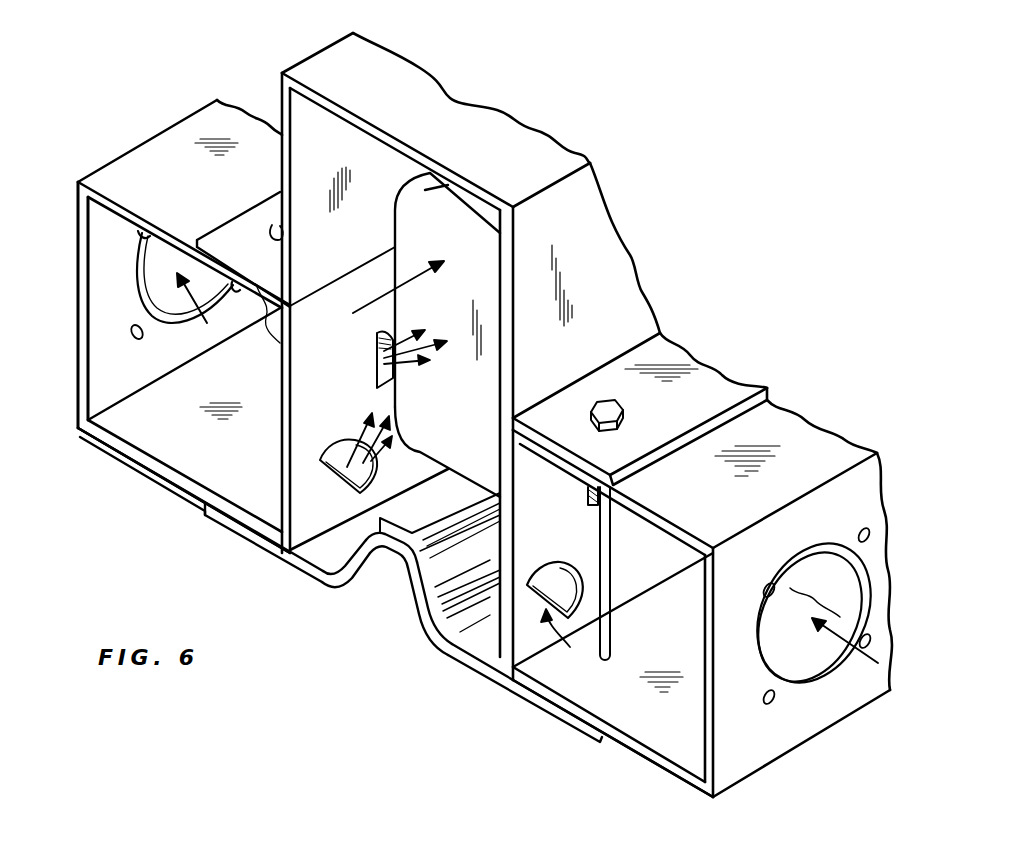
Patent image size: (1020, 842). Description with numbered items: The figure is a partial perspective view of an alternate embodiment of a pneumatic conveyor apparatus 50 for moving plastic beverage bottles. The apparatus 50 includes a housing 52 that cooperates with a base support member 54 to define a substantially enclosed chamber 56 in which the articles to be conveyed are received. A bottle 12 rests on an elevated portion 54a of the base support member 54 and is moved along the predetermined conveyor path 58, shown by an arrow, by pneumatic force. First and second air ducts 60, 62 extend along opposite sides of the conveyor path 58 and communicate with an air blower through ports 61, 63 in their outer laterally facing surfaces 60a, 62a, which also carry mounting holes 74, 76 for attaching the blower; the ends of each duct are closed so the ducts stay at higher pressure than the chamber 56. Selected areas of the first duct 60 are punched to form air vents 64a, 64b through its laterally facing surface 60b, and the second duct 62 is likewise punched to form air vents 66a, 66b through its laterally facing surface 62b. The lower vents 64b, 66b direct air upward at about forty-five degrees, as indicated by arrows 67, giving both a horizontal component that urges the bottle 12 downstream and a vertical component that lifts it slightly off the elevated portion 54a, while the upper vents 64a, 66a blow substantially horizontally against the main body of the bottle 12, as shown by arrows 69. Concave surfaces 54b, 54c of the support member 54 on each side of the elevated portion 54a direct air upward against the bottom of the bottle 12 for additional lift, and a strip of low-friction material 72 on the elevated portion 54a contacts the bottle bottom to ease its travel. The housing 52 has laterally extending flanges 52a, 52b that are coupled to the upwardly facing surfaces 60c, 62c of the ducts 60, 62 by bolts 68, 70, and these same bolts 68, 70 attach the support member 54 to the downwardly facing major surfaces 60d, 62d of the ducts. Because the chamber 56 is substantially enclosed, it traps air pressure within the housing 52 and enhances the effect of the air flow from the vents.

The bottle 12 is at (407, 213).
The pneumatic conveyor apparatus 50 is at (525, 74).
The housing 52 is at (595, 237).
The laterally extending flange 52a is at (178, 190).
The laterally extending flange 52b is at (710, 371).
The base support member 54 is at (242, 533).
The elevated portion 54a is at (391, 560).
The concave surface 54b is at (327, 578).
The concave surface 54c is at (419, 612).
The chamber 56 is at (282, 117).
The conveyor path 58 is at (382, 300).
The first air duct 60 is at (131, 150).
The laterally facing surface 60a is at (103, 297).
The laterally facing surface 60b is at (305, 434).
The upwardly facing surface 60c is at (197, 127).
The downwardly facing major surface 60d is at (150, 489).
The port 61 is at (206, 322).
The second air duct 62 is at (827, 427).
The laterally facing surface 62a is at (795, 733).
The laterally facing surface 62b is at (633, 570).
The upwardly facing surface 62c is at (787, 420).
The downwardly facing major surface 62d is at (630, 752).
The port 63 is at (857, 650).
The upper air vent 64a is at (376, 367).
The lower air vent 64b is at (350, 492).
The upper air vent 66a is at (589, 497).
The lower air vent 66b is at (537, 576).
The arrows 67 is at (354, 452).
The bolt 68 is at (243, 253).
The arrows 69 is at (405, 336).
The bolt 70 is at (603, 402).
The strip of material 72 is at (456, 486).
The mounting holes 74 is at (134, 340).
The mounting holes 76 is at (860, 538).